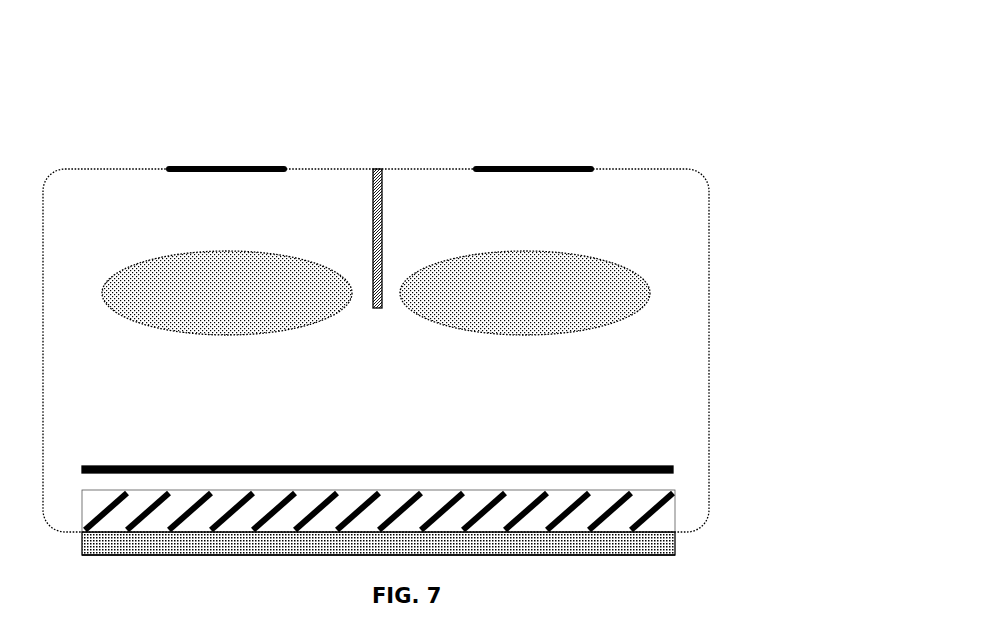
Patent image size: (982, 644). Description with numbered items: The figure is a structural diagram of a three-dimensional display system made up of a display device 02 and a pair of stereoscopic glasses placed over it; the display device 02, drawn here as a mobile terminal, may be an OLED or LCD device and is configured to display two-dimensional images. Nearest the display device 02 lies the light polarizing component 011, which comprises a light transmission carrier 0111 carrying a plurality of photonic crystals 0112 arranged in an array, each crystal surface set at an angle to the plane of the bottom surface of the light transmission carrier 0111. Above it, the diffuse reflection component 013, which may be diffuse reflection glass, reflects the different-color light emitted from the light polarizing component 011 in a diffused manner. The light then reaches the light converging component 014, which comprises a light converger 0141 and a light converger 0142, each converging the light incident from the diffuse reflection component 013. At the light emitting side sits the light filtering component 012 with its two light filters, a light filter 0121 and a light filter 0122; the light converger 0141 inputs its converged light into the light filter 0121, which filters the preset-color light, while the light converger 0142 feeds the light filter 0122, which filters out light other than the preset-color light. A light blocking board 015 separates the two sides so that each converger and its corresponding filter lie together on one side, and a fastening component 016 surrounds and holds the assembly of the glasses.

The light filtering component 012 is at (380, 99).
The light filter 0121 is at (261, 157).
The light filter 0122 is at (516, 158).
The light blocking board 015 is at (392, 175).
The fastening component 016 is at (722, 224).
The light converging component 014 is at (473, 319).
The light converger 0141 is at (329, 324).
The light converger 0142 is at (642, 316).
The diffuse reflection component 013 is at (674, 461).
The light polarizing component 011 is at (463, 522).
The photonic crystals 0112 is at (688, 500).
The light transmission carrier 0111 is at (688, 526).
The display device 02 is at (688, 547).